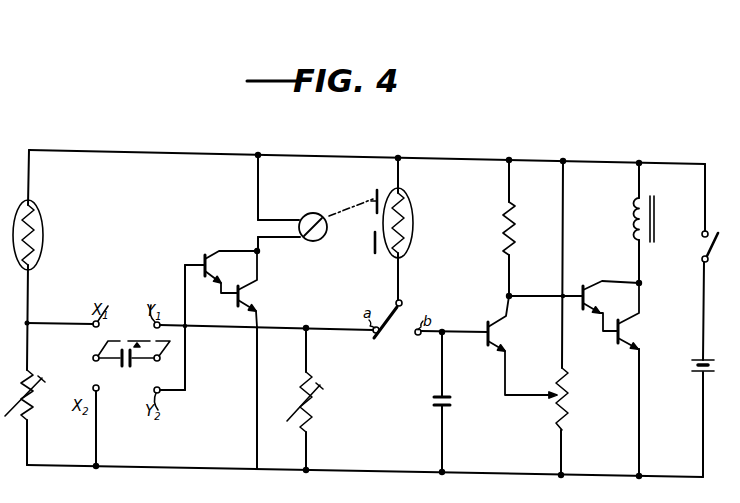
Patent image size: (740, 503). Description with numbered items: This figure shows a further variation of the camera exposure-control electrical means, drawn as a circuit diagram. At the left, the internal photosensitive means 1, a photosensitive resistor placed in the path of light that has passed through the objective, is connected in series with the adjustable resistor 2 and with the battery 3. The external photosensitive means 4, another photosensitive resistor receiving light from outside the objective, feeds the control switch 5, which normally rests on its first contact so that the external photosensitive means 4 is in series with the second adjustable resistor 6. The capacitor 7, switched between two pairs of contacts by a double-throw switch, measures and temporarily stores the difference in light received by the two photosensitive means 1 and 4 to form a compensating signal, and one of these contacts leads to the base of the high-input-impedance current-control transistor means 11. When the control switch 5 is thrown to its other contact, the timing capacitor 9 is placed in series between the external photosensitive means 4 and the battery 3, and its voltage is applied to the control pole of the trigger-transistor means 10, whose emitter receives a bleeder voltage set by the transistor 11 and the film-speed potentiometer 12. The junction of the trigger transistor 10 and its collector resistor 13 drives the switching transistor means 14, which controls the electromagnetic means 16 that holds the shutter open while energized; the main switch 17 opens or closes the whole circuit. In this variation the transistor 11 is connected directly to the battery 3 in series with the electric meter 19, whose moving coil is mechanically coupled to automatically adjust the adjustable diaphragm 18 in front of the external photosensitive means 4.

The internal photosensitive means 1 is at (44, 238).
The adjustable resistor 2 is at (34, 405).
The battery 3 is at (695, 373).
The external photosensitive means 4 is at (414, 234).
The control switch 5 is at (400, 343).
The second adjustable resistor 6 is at (312, 408).
The capacitor 7 is at (127, 367).
The timing capacitor 9 is at (433, 410).
The trigger-transistor means 10 is at (488, 350).
The current-control transistor means 11 is at (222, 253).
The potentiometer 12 is at (565, 405).
The collector resistor 13 is at (512, 236).
The switching transistor means 14 is at (598, 336).
The electromagnetic means 16 is at (633, 230).
The main switch 17 is at (699, 253).
The adjustable diaphragm 18 is at (375, 253).
The electric meter 19 is at (313, 241).